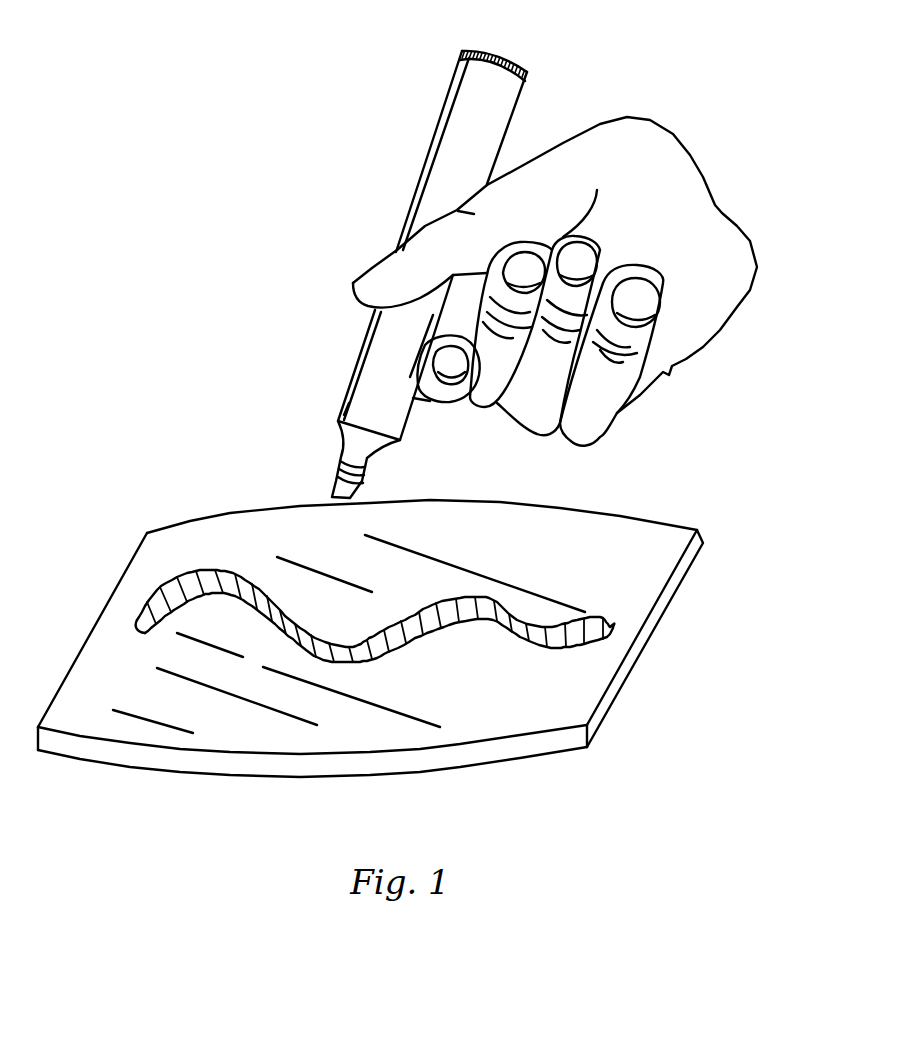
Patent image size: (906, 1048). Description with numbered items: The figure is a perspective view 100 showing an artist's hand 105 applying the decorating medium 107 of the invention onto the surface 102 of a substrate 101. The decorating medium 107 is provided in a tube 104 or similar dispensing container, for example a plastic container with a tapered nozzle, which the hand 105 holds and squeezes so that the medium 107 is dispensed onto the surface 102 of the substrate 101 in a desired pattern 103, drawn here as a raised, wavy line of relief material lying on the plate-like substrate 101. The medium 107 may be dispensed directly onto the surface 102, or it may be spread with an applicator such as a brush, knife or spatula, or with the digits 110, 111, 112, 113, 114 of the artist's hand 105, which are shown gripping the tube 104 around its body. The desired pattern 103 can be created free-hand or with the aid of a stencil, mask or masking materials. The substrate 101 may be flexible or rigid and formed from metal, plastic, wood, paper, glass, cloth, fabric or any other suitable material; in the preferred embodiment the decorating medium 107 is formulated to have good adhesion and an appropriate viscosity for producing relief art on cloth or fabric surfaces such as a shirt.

The perspective view 100 is at (249, 110).
The substrate 101 is at (605, 716).
The surface 102 is at (648, 542).
The desired pattern 103 is at (157, 590).
The tube 104 is at (437, 130).
The artist's hand 105 is at (704, 346).
The decorating medium 107 is at (331, 497).
The digit 110 is at (354, 284).
The digit 111 is at (533, 240).
The digit 112 is at (592, 242).
The digit 113 is at (604, 290).
The digit 114 is at (430, 403).